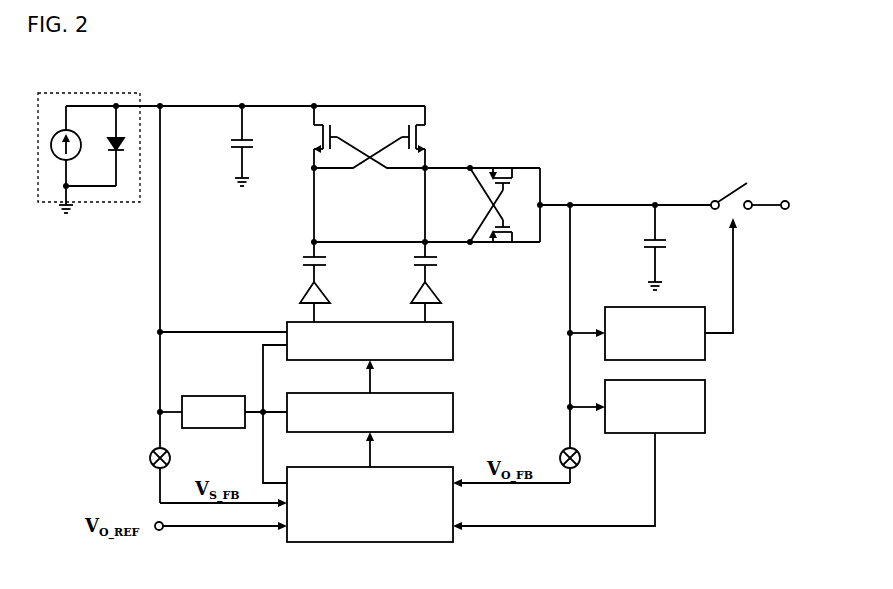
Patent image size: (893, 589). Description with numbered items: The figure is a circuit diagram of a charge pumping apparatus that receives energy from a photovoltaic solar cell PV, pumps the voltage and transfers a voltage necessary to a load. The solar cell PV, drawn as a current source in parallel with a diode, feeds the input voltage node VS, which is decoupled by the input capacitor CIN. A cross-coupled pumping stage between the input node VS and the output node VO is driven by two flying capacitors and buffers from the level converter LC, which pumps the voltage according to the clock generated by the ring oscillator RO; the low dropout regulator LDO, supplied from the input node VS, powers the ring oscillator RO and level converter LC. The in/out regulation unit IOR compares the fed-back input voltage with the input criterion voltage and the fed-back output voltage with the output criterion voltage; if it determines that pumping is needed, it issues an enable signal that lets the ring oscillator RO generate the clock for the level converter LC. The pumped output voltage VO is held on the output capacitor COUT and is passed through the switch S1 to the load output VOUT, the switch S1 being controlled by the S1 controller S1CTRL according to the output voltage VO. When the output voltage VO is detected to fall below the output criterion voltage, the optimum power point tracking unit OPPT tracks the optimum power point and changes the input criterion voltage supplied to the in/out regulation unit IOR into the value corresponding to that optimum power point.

The PV solar cell PV is at (89, 142).
The input voltage VS is at (245, 93).
The input capacitor CIN is at (223, 146).
The output voltage VO is at (624, 193).
The output capacitor COUT is at (678, 247).
The switch S1 is at (750, 182).
The load output voltage VOUT is at (782, 190).
The S1 controller S1CTRL is at (653, 289).
The optimum power point tracking unit OPPT is at (579, 455).
The level converter LC is at (306, 402).
The ring oscillator RO is at (370, 396).
The low dropout regulator LDO is at (223, 412).
The in/out regulation unit IOR is at (370, 487).